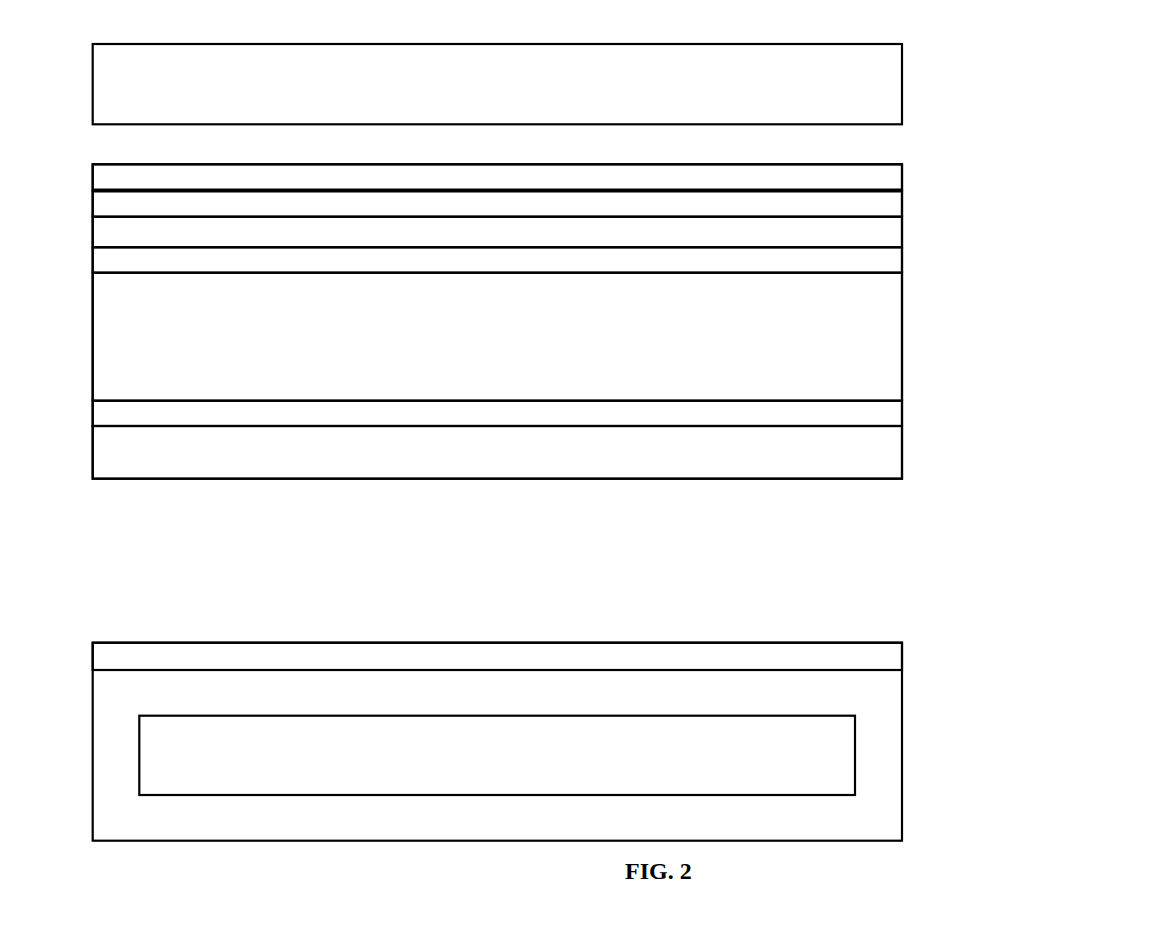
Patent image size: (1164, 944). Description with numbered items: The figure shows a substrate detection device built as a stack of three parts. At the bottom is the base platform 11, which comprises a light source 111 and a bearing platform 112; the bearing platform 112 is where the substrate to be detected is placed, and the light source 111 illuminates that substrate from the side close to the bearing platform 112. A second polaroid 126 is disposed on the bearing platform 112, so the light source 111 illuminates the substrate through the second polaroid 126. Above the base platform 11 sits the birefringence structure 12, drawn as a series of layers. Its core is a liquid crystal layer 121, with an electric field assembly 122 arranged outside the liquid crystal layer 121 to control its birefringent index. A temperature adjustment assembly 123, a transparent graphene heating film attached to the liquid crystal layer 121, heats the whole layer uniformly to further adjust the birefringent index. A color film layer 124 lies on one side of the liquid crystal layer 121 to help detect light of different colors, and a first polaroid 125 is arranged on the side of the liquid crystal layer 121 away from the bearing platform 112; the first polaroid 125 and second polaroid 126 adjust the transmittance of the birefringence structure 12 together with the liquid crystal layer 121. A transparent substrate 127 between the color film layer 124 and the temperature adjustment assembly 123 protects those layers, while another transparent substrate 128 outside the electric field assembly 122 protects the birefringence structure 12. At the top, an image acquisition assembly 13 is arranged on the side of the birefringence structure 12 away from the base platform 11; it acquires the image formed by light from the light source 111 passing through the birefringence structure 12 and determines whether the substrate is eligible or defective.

The base platform 11 is at (603, 742).
The light source 111 is at (568, 755).
The bearing platform 112 is at (546, 742).
The birefringence structure 12 is at (621, 414).
The liquid crystal layer 121 is at (568, 337).
The electric field assembly 122 is at (568, 417).
The temperature adjustment assembly 123 is at (568, 202).
The color film layer 124 is at (568, 261).
The first polaroid 125 is at (568, 172).
The second polaroid 126 is at (568, 656).
The transparent substrate 127 is at (568, 231).
The transparent substrate 128 is at (568, 453).
The image acquisition assembly 13 is at (561, 84).